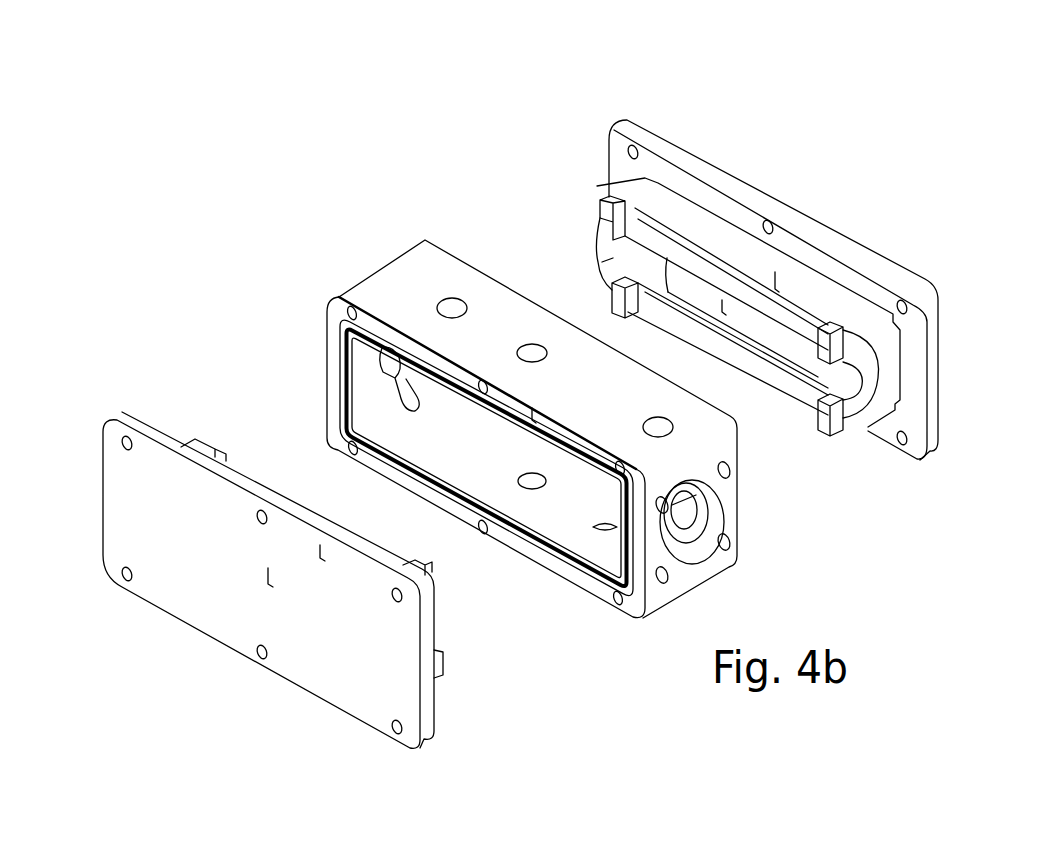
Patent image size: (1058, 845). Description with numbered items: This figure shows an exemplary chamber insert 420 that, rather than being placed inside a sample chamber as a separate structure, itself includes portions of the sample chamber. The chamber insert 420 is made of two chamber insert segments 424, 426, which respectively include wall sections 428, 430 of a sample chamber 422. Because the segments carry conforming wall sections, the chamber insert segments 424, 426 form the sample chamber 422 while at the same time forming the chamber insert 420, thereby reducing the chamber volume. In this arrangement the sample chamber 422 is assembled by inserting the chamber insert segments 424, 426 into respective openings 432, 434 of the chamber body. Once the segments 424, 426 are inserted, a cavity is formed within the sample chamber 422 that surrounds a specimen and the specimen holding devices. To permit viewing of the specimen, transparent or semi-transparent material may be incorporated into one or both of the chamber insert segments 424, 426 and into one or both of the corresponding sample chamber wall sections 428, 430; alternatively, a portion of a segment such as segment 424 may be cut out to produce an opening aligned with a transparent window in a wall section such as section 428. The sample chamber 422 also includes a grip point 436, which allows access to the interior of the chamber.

The chamber insert 420 is at (619, 94).
The sample chamber 422 is at (553, 567).
The chamber insert segment 424 is at (217, 442).
The chamber insert segment 426 is at (600, 200).
The wall section 428 is at (197, 633).
The wall section 430 is at (893, 272).
The opening 432 is at (442, 434).
The opening 434 is at (532, 276).
The grip point 436 is at (723, 518).